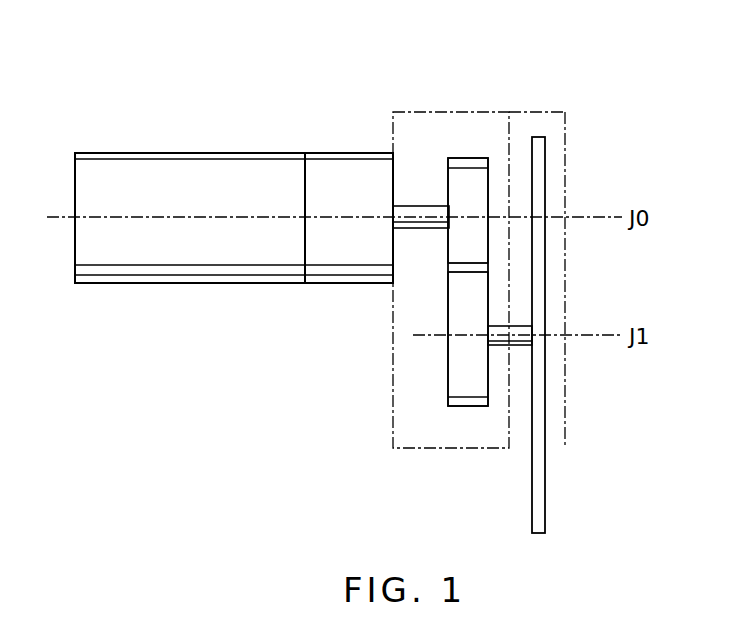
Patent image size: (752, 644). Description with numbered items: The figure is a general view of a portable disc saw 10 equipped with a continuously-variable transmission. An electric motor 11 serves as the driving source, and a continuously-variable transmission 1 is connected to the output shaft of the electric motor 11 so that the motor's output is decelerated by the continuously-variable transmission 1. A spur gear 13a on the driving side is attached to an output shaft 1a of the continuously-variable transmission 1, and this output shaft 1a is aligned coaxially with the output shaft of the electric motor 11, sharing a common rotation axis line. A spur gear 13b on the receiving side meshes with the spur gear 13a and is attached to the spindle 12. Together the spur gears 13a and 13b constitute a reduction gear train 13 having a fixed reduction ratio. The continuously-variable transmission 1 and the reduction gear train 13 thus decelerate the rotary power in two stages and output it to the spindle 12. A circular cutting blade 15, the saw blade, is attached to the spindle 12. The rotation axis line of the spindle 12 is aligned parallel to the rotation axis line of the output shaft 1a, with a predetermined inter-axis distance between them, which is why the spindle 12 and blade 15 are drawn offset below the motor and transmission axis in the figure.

The continuously-variable transmission 1 is at (343, 185).
The output shaft 1a is at (413, 210).
The portable disc saw 10 is at (532, 102).
The electric motor 11 is at (183, 185).
The spindle 12 is at (521, 345).
The reduction gear train 13 is at (446, 302).
The spur gear 13a is at (465, 188).
The spur gear 13b is at (465, 359).
The circular cutting blade 15 is at (540, 495).